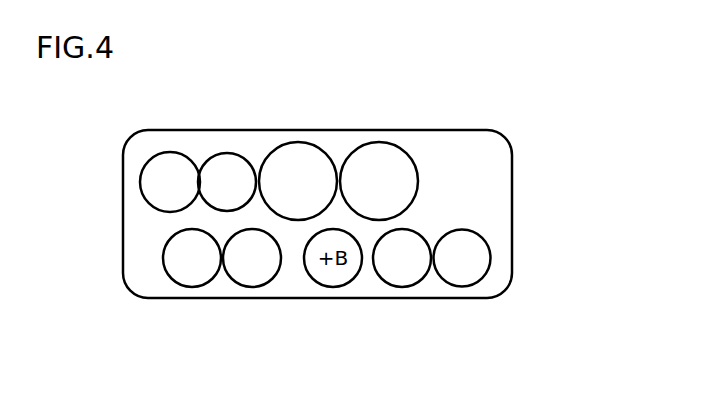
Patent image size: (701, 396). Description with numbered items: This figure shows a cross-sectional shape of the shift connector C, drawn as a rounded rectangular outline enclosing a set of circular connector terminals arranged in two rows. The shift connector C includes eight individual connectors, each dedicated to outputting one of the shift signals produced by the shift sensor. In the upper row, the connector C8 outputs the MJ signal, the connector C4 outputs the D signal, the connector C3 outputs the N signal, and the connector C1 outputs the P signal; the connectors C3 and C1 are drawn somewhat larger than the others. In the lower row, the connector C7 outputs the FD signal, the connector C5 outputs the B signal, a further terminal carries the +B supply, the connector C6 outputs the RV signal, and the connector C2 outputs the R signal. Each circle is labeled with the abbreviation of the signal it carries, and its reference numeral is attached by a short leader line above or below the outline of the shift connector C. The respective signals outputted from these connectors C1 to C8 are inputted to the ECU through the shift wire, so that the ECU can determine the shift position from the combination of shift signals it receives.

The shift connector C is at (512, 210).
The connector C1 is at (377, 142).
The connector C2 is at (462, 287).
The connector C3 is at (299, 142).
The connector C4 is at (226, 153).
The connector C5 is at (250, 287).
The connector C6 is at (401, 287).
The connector C7 is at (192, 287).
The connector C8 is at (170, 152).